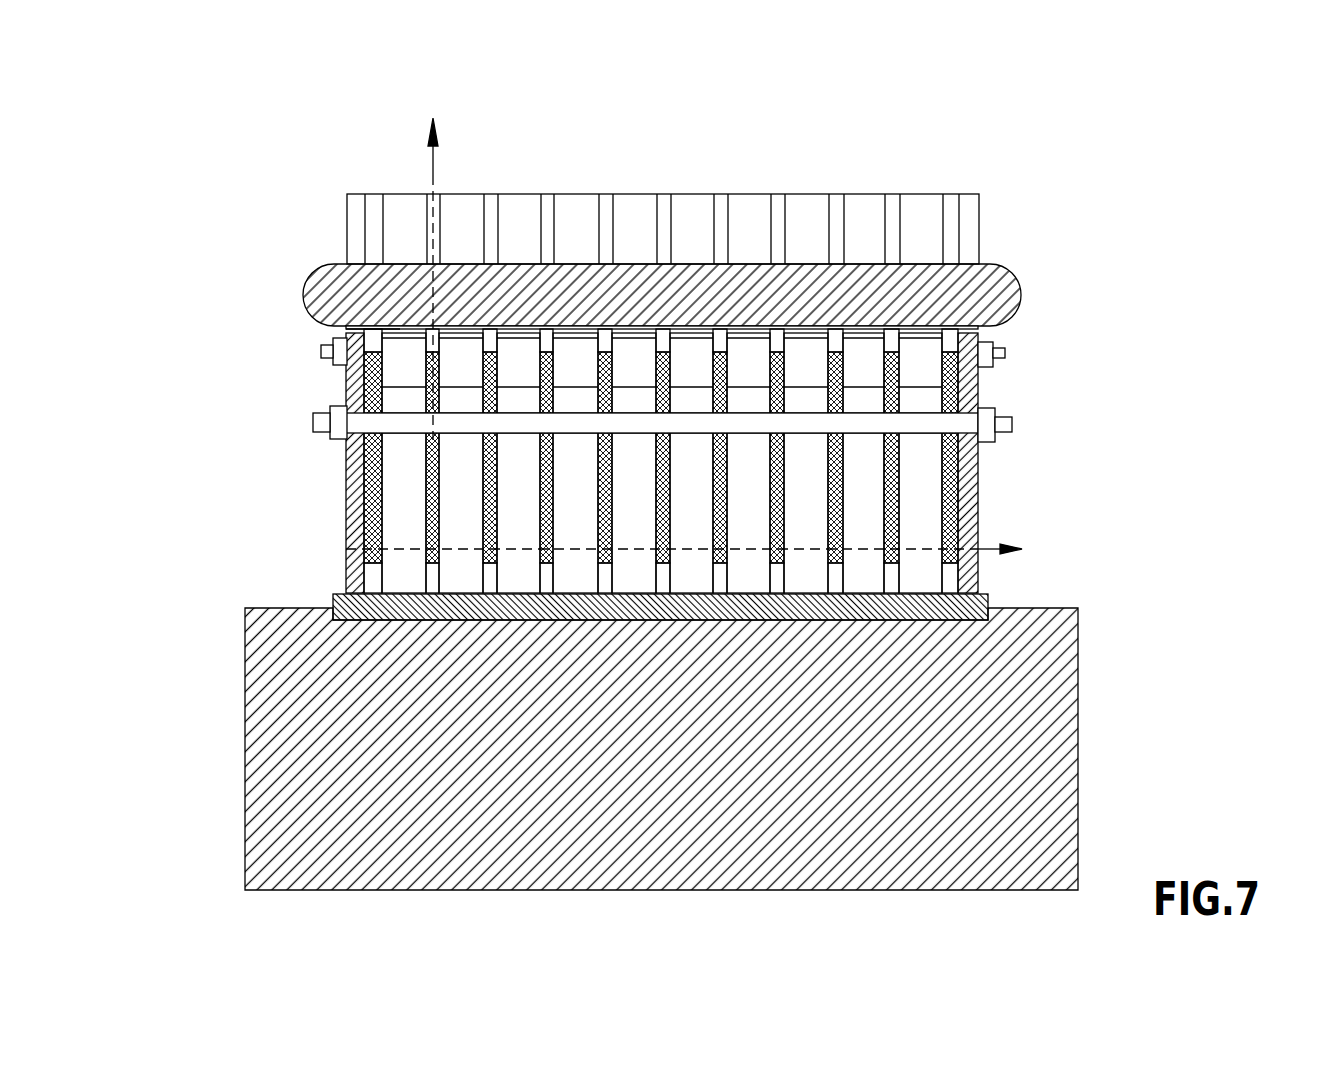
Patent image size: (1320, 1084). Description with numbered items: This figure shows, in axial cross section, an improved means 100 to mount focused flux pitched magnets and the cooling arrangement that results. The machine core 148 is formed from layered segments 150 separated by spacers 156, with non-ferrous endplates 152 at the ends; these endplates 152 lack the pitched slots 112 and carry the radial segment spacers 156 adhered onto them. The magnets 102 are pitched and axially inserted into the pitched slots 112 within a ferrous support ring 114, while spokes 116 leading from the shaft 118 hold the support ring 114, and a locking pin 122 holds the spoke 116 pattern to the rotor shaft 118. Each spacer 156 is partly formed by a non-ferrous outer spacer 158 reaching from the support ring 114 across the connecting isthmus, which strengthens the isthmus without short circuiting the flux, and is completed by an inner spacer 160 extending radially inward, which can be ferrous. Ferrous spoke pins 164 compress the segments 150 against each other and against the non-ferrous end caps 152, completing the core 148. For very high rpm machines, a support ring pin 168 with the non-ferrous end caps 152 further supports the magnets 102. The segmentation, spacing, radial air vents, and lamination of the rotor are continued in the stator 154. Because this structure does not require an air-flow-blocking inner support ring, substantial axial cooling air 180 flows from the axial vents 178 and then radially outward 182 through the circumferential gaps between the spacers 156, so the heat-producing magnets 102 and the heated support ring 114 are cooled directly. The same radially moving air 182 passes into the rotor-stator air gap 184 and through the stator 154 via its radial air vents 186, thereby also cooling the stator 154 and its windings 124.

The means to mount focused flux magnets 100 is at (1073, 190).
The magnets 102 is at (661, 365).
The pitched slots 112 is at (878, 337).
The ferrous support ring 114 is at (661, 365).
The spokes 116 is at (749, 463).
The shaft 118 is at (1048, 692).
The locking pin 122 is at (983, 603).
The windings 124 is at (993, 278).
The machine core 148 is at (715, 365).
The segments 150 is at (980, 325).
The non-ferrous endplates 152 is at (973, 380).
The stator 154 is at (957, 180).
The spacer 156 is at (365, 380).
The outer spacer 158 is at (345, 367).
The inner spacer 160 is at (360, 490).
The spoke pins 164 is at (1010, 422).
The support ring pin 168 is at (1005, 352).
The axial vents 178 is at (922, 520).
The axial cooling air 180 is at (346, 549).
The radially outward air 182 is at (433, 170).
The rotor-stator air gap 184 is at (370, 329).
The radial air vents 186 is at (720, 195).